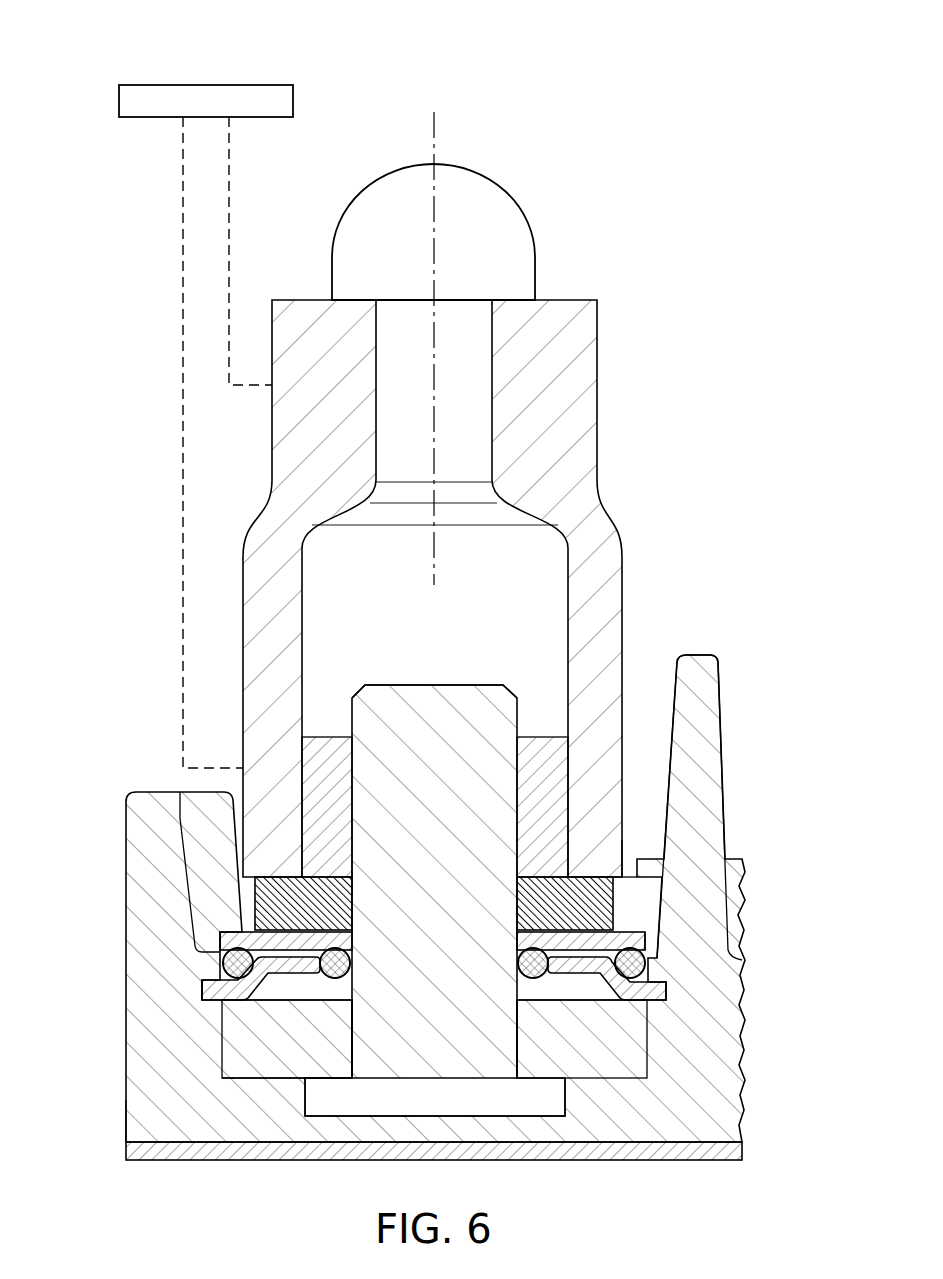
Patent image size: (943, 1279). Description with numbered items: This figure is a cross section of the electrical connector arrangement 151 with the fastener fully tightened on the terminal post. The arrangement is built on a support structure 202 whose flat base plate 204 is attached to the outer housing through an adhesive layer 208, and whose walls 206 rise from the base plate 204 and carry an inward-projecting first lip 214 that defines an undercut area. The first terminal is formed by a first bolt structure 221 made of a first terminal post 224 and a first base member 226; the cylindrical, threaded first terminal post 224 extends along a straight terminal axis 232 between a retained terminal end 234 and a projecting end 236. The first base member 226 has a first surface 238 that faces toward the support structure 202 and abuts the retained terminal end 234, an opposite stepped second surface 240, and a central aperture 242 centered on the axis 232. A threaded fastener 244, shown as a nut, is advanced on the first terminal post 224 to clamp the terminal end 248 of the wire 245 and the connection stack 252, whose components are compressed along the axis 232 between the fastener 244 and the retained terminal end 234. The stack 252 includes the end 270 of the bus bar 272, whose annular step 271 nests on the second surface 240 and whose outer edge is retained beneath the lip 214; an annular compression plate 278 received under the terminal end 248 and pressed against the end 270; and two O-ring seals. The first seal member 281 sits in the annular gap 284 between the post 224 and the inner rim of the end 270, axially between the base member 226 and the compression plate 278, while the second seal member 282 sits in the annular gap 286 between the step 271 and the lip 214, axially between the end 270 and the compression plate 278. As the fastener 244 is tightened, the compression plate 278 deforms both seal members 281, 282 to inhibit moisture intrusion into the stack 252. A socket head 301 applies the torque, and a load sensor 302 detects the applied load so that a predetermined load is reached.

The electrical connector arrangement 151 is at (137, 558).
The support structure 202 is at (713, 1090).
The base plate 204 is at (145, 1122).
The walls 206 is at (718, 828).
The adhesive layer 208 is at (268, 1162).
The first lip 214 is at (652, 955).
The first bolt structure 221 is at (273, 1033).
The first terminal post 224 is at (456, 824).
The first base member 226 is at (647, 1035).
The terminal axis 232 is at (434, 130).
The retained terminal end 234 is at (563, 1100).
The projecting end 236 is at (443, 697).
The first surface 238 is at (257, 1078).
The second surface 240 is at (297, 967).
The aperture 242 is at (352, 1023).
The threaded fastener 244 is at (520, 757).
The wire 245 is at (255, 886).
The terminal end of the wire 248 is at (520, 890).
The connection stack 252 is at (640, 870).
The end of the bus bar 270 is at (646, 963).
The annular step 271 is at (255, 950).
The bus bar 272 is at (192, 1002).
The compression plate 278 is at (345, 938).
The first seal member 281 is at (351, 962).
The second seal member 282 is at (215, 963).
The annular gap 284 is at (517, 963).
The annular gap 286 is at (617, 977).
The socket head 301 is at (605, 513).
The load sensor 302 is at (119, 100).